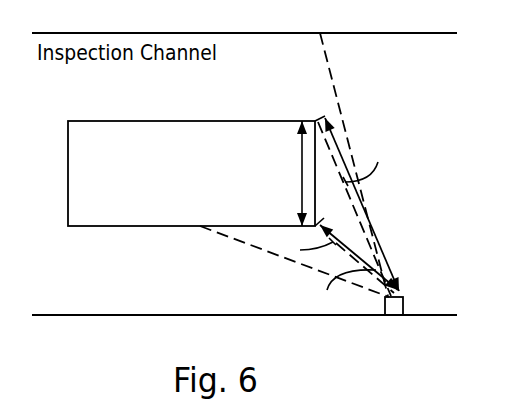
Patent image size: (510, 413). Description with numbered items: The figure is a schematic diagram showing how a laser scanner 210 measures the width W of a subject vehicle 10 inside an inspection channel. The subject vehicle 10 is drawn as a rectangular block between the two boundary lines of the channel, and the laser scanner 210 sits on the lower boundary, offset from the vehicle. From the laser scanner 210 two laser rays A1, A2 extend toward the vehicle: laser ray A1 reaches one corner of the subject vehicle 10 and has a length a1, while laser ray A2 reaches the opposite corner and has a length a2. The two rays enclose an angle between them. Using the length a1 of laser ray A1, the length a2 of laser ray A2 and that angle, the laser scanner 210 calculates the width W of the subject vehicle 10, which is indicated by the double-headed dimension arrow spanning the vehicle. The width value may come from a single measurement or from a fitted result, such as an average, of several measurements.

The subject vehicle 10 is at (191, 173).
The laser scanner 210 is at (394, 305).
The width W is at (302, 173).
The length of laser ray A1 a1 is at (359, 257).
The length of laser ray A2 a2 is at (362, 204).
The laser ray A1 is at (309, 246).
The laser ray A2 is at (364, 164).